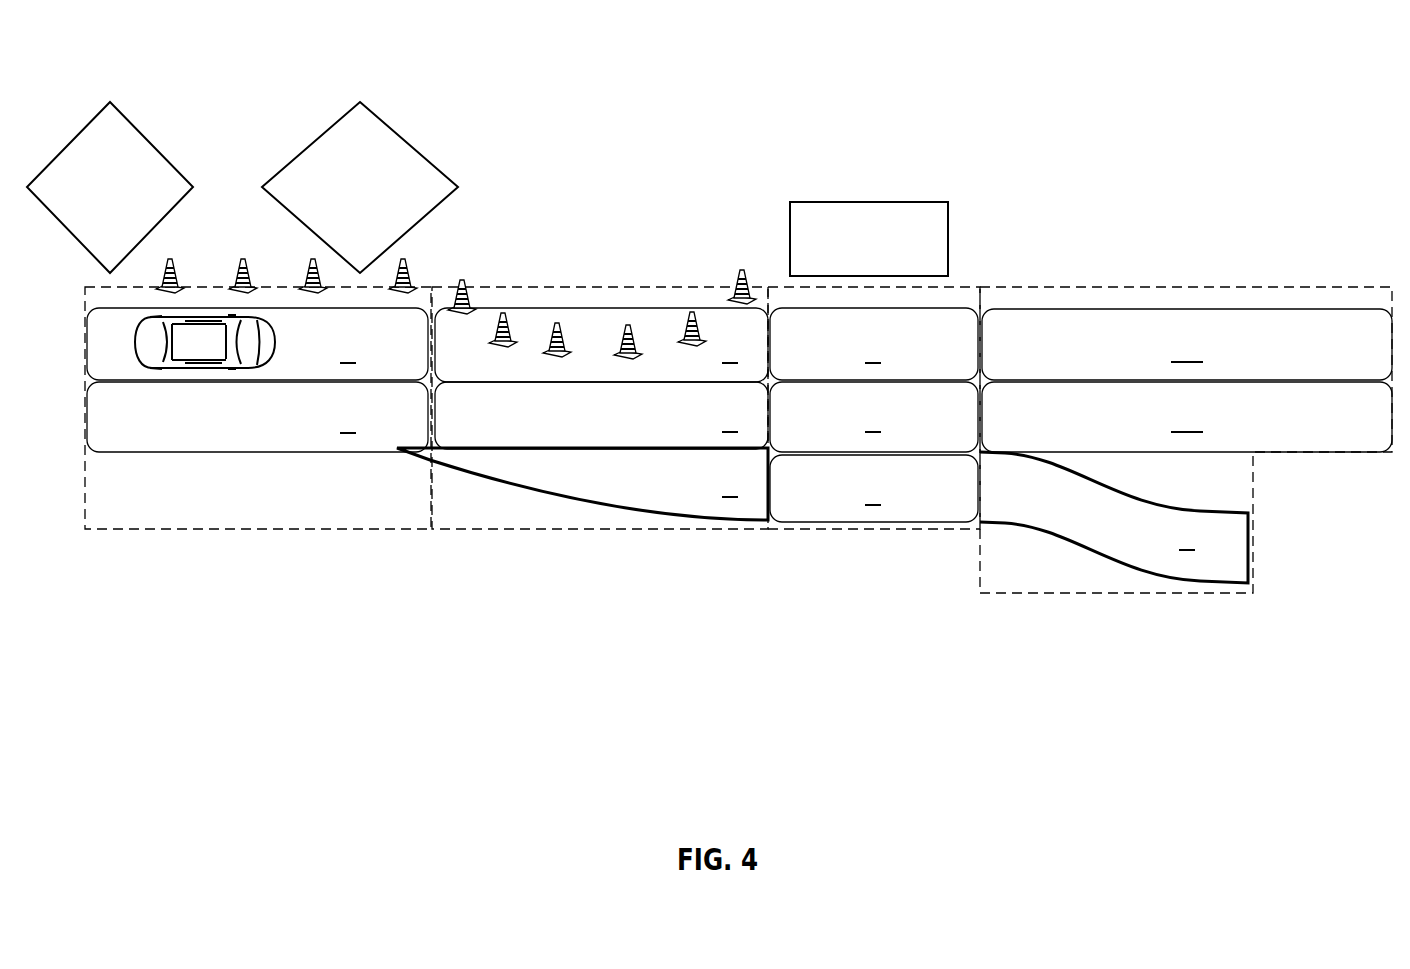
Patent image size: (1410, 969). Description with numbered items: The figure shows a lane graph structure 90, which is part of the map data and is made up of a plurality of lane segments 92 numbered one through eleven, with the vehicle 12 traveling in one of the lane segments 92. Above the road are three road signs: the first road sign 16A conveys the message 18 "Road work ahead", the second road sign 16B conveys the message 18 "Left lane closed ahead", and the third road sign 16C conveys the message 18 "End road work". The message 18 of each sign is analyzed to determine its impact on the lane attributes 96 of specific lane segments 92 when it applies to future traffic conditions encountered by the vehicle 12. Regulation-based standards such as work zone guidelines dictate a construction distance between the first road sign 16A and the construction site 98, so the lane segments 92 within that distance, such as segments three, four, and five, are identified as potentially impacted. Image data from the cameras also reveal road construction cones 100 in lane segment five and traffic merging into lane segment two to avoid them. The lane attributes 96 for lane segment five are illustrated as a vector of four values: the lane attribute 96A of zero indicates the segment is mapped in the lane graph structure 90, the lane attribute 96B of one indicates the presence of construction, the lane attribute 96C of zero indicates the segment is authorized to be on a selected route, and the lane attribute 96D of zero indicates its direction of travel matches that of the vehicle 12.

The lane graph structure 90 is at (1209, 60).
The lane segments 92 is at (97, 333).
The vehicle 12 is at (133, 330).
The first road sign 16A is at (133, 123).
The second road sign 16B is at (393, 130).
The third road sign 16C is at (874, 202).
The message 18 is at (159, 185).
The construction site 98 is at (625, 287).
The road construction cones 100 is at (241, 262).
The lane attributes 96 is at (873, 722).
The lane attribute 96A is at (920, 731).
The lane attribute 96B is at (952, 731).
The lane attribute 96C is at (987, 731).
The lane attribute 96D is at (1024, 731).